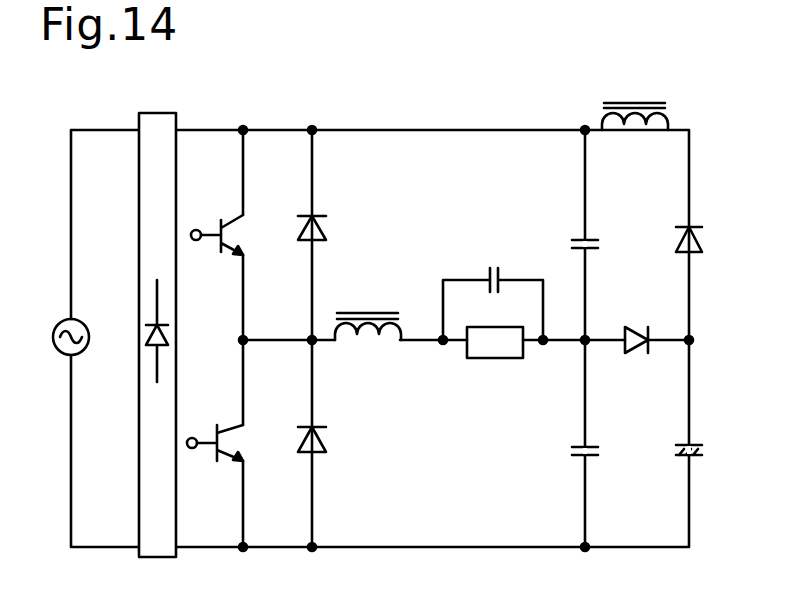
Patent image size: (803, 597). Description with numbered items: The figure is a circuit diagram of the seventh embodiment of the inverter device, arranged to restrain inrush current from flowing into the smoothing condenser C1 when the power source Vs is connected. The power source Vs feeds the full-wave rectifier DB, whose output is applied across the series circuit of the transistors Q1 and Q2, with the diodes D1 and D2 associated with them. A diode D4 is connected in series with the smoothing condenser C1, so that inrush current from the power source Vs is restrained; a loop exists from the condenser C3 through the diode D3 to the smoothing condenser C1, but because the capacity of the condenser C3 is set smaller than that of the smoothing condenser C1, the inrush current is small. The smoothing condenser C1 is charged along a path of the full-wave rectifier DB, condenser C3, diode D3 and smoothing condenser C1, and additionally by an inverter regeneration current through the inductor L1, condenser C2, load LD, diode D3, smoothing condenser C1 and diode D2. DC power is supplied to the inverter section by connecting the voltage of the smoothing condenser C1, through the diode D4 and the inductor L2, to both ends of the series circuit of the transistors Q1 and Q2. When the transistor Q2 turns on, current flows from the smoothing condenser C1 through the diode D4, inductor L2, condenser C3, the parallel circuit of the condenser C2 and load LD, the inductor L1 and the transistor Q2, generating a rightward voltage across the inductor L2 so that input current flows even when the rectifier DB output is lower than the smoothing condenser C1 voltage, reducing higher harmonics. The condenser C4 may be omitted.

The power source Vs is at (58, 350).
The full-wave rectifier DB is at (156, 321).
The transistor Q1 is at (235, 235).
The transistor Q2 is at (232, 444).
The diode D1 is at (332, 226).
The diode D2 is at (332, 444).
The inductor L1 is at (368, 346).
The condenser C2 is at (493, 288).
The load LD is at (495, 342).
The condenser C3 is at (602, 248).
The condenser C4 is at (602, 452).
The diode D3 is at (630, 326).
The diode D4 is at (706, 244).
The inductor L2 is at (635, 103).
The smoothing condenser C1 is at (704, 452).